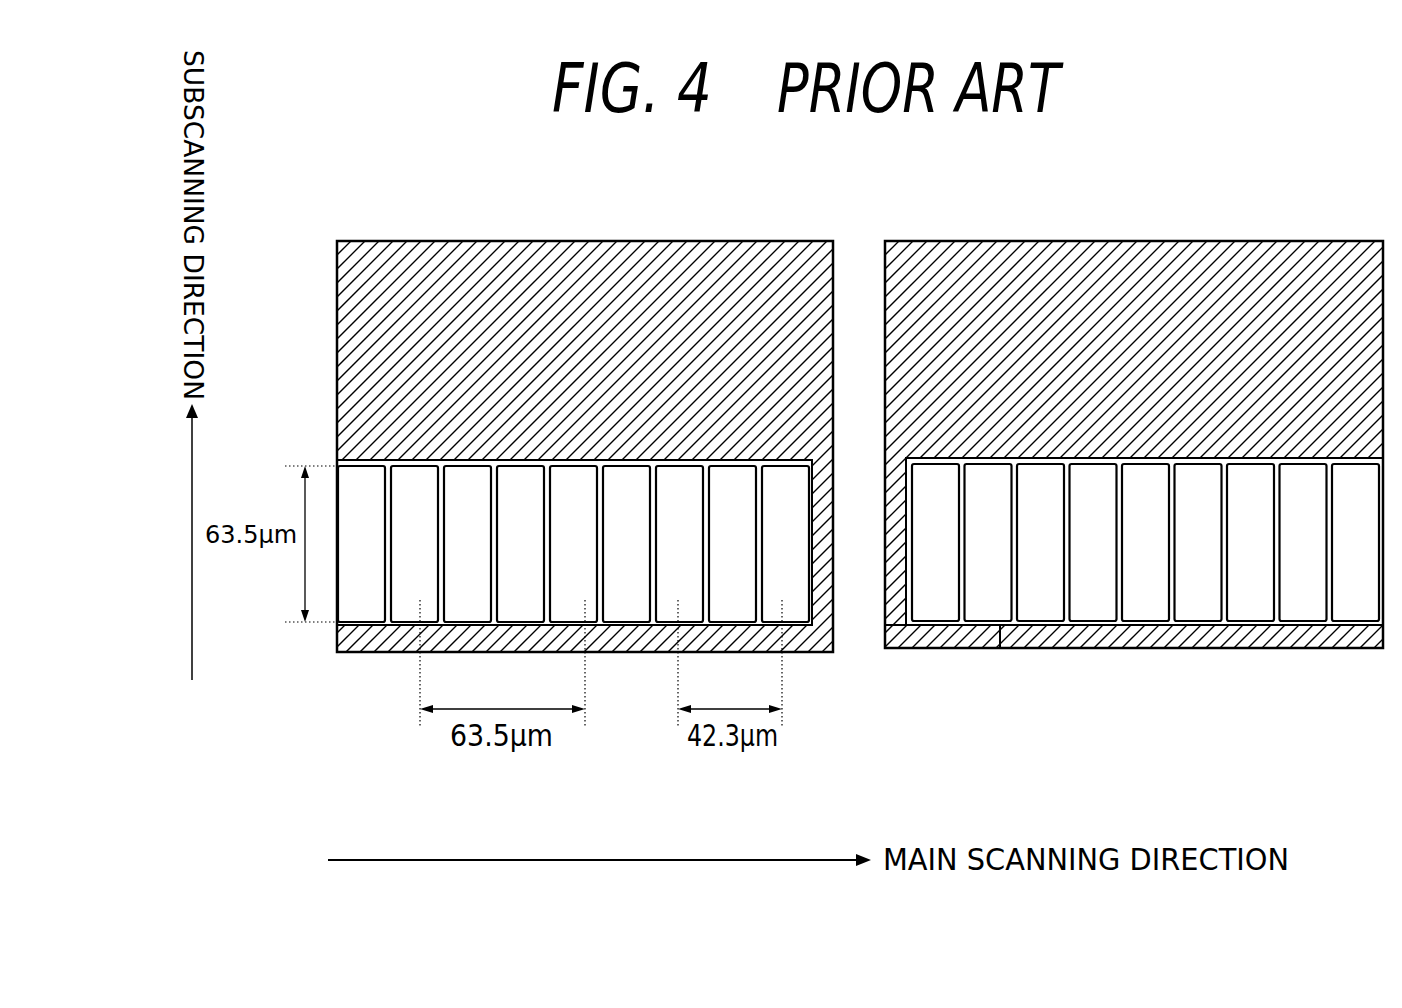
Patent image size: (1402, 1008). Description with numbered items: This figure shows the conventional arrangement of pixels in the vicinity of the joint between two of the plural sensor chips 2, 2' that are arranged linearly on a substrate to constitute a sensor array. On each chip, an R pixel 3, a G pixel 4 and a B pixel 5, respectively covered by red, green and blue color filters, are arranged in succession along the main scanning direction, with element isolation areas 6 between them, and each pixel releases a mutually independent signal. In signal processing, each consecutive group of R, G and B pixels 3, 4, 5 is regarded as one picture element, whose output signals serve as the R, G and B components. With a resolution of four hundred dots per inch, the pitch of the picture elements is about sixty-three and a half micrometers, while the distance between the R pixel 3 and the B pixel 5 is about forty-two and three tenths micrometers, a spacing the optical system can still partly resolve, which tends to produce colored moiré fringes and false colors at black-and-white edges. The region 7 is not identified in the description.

The sensor chip 2 is at (616, 400).
The sensor chip 2' is at (940, 449).
The R pixel 3 is at (1257, 602).
The G pixel 4 is at (1312, 600).
The B pixel 5 is at (1360, 600).
The element isolation area 6 is at (1120, 628).
The light shielding film 7 is at (933, 628).